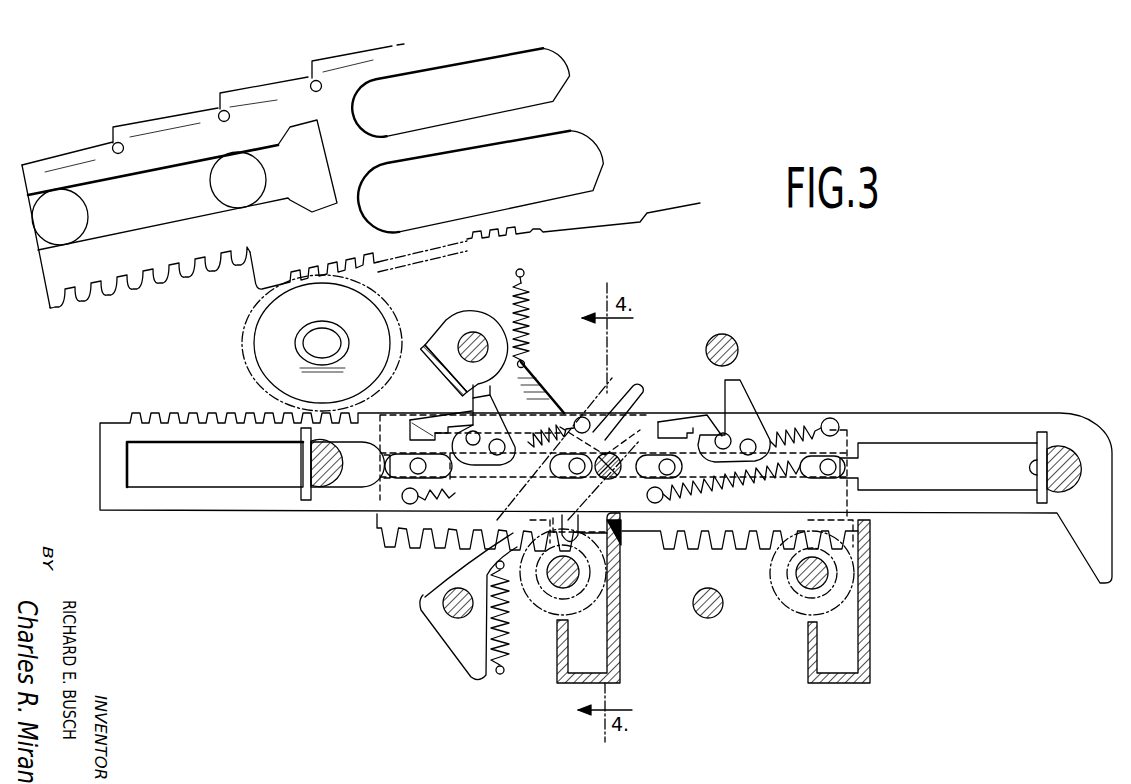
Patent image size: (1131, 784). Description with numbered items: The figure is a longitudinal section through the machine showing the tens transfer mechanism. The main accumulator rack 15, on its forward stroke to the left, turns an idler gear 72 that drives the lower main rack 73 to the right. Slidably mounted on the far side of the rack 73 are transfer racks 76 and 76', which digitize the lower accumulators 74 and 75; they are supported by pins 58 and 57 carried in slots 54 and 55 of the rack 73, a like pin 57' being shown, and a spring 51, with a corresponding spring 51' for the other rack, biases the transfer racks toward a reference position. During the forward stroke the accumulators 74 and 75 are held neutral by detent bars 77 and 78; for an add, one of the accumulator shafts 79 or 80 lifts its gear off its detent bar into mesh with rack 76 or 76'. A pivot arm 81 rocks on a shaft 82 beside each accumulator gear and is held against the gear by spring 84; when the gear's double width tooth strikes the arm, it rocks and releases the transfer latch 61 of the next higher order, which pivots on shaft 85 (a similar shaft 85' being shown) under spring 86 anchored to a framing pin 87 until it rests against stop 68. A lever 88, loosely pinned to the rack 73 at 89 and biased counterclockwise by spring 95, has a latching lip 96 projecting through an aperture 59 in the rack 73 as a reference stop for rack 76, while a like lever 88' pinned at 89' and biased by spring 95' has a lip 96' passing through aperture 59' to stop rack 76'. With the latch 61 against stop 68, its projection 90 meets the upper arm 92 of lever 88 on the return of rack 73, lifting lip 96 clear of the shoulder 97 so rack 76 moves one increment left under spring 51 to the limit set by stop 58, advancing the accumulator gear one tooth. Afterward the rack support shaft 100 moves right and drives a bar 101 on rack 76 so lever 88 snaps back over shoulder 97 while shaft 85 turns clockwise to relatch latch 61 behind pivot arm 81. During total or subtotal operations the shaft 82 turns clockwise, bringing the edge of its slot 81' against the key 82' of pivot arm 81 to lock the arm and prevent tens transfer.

The main accumulator rack 15 is at (603, 222).
The spring 51 is at (447, 493).
The spring 51' is at (723, 484).
The slot 54 is at (548, 466).
The slot 55 is at (609, 479).
The pin 57 is at (647, 455).
The pin 57' is at (822, 479).
The pin 58 is at (412, 460).
The aperture 59 is at (435, 407).
The aperture 59' is at (686, 403).
The transfer latch 61 is at (532, 388).
The stop 68 is at (638, 395).
The idler gear 72 is at (245, 331).
The lower main rack 73 is at (190, 505).
The lower accumulator 74 is at (540, 600).
The lower accumulator 75 is at (782, 575).
The transfer rack 76 is at (477, 541).
The transfer rack 76' is at (740, 553).
The detent bar 77 is at (640, 620).
The detent bar 78 is at (886, 620).
The accumulator shaft 79 is at (570, 585).
The accumulator shaft 80 is at (820, 585).
The pivot arm 81 is at (451, 613).
The slot 81' is at (449, 570).
The shaft 82 is at (719, 613).
The key 82' is at (435, 586).
The spring 84 is at (504, 668).
The shaft 85 is at (460, 347).
The cam pin 85' is at (715, 336).
The spring 86 is at (530, 305).
The framing pin 87 is at (524, 272).
The lever 88 is at (470, 420).
The lever 88' is at (734, 408).
The pin 89 is at (472, 421).
The pin 89' is at (748, 414).
The projection 90 is at (440, 368).
The upper arm 92 is at (526, 366).
The spring 95 is at (559, 413).
The spring 95' is at (804, 413).
The latching lip 96 is at (402, 427).
The latching lip 96' is at (689, 401).
The shoulder 97 is at (410, 421).
The rack support shaft 100 is at (316, 502).
The bar 101 is at (375, 466).